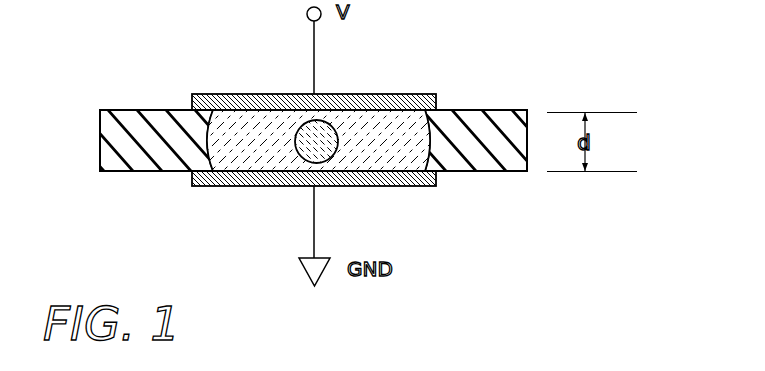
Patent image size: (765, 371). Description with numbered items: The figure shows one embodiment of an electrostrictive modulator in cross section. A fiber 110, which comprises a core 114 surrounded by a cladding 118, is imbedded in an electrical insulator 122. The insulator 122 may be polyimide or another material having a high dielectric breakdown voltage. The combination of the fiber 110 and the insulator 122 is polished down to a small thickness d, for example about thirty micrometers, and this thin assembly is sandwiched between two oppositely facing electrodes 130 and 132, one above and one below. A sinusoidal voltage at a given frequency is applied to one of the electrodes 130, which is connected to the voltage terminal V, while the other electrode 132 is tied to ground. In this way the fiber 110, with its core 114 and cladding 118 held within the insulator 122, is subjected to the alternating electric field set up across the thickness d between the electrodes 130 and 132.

The fiber 110 is at (200, 140).
The electrical insulator 122 is at (503, 124).
The cladding 118 is at (232, 188).
The electrode 130 is at (385, 93).
The electrode 132 is at (400, 188).
The core 114 is at (307, 153).